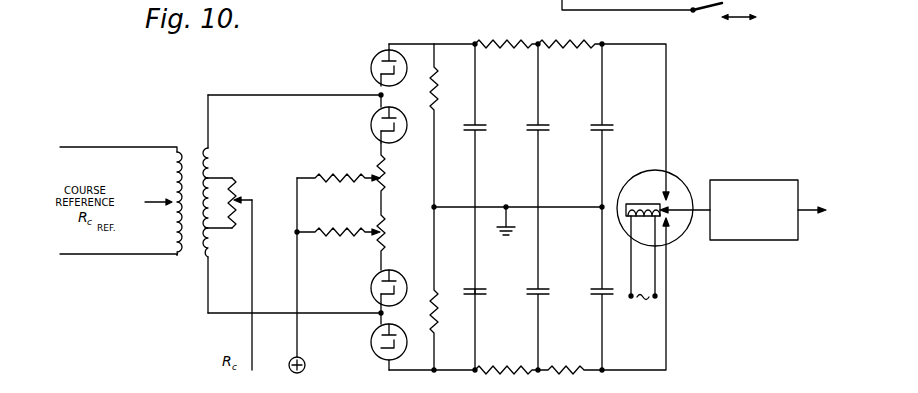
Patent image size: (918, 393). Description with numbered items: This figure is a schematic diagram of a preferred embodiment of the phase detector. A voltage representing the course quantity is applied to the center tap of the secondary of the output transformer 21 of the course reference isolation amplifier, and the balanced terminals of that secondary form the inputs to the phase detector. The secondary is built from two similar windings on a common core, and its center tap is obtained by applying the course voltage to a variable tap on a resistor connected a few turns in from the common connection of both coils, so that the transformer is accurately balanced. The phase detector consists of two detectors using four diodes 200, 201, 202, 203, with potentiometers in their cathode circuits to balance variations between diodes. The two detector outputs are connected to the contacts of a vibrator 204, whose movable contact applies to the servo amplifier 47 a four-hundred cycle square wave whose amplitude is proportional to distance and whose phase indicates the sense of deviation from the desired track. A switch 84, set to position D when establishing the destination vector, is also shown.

The output transformer 21 is at (188, 146).
The diode 200 is at (371, 66).
The diode 201 is at (371, 134).
The diode 202 is at (371, 288).
The diode 203 is at (371, 352).
The vibrator 204 is at (680, 186).
The servo amplifier 47 is at (765, 180).
The switch 84 is at (706, 19).